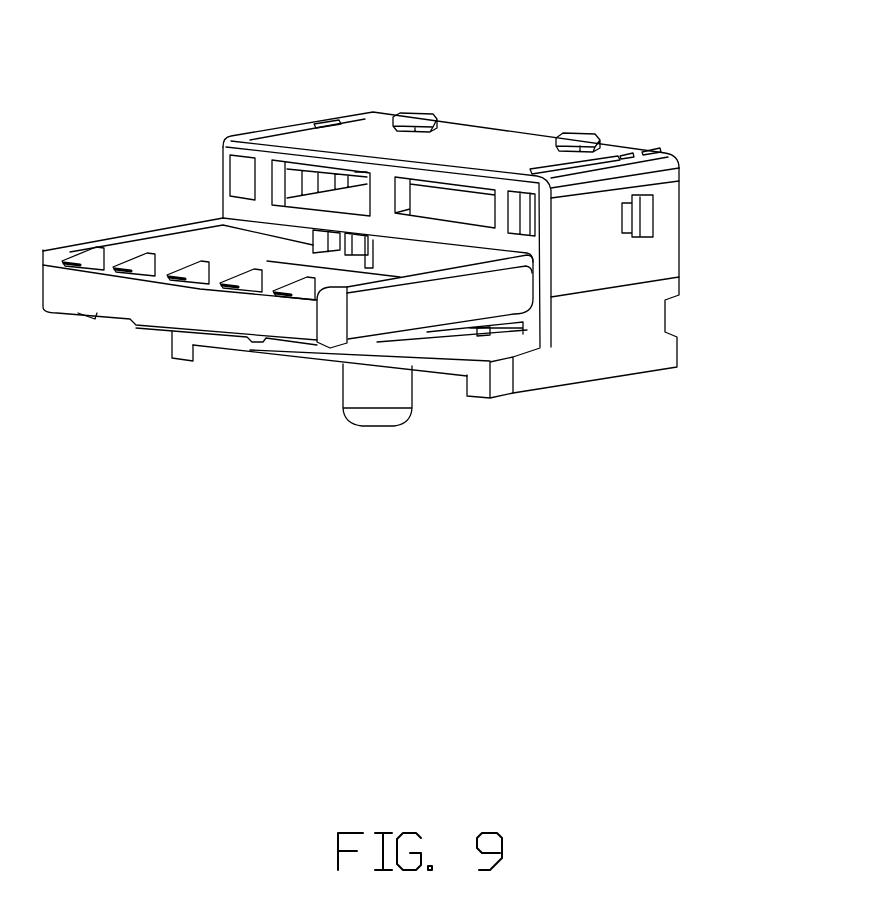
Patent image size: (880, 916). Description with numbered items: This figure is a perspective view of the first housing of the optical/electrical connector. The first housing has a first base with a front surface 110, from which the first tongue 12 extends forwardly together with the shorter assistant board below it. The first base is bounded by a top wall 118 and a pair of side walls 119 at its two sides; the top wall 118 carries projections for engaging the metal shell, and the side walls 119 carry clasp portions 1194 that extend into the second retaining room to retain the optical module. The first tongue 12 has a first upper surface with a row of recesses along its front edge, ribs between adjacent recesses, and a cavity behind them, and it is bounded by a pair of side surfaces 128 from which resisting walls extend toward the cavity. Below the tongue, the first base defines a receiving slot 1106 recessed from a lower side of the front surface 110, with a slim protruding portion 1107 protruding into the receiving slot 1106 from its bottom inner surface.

The front surface 110 is at (424, 247).
The top wall 118 is at (496, 111).
The side wall 119 is at (626, 280).
The clasp portion 1194 is at (238, 165).
The first tongue 12 is at (288, 339).
The side surface 128 is at (410, 371).
The receiving slot 1106 is at (467, 405).
The slim protruding portion 1107 is at (448, 407).